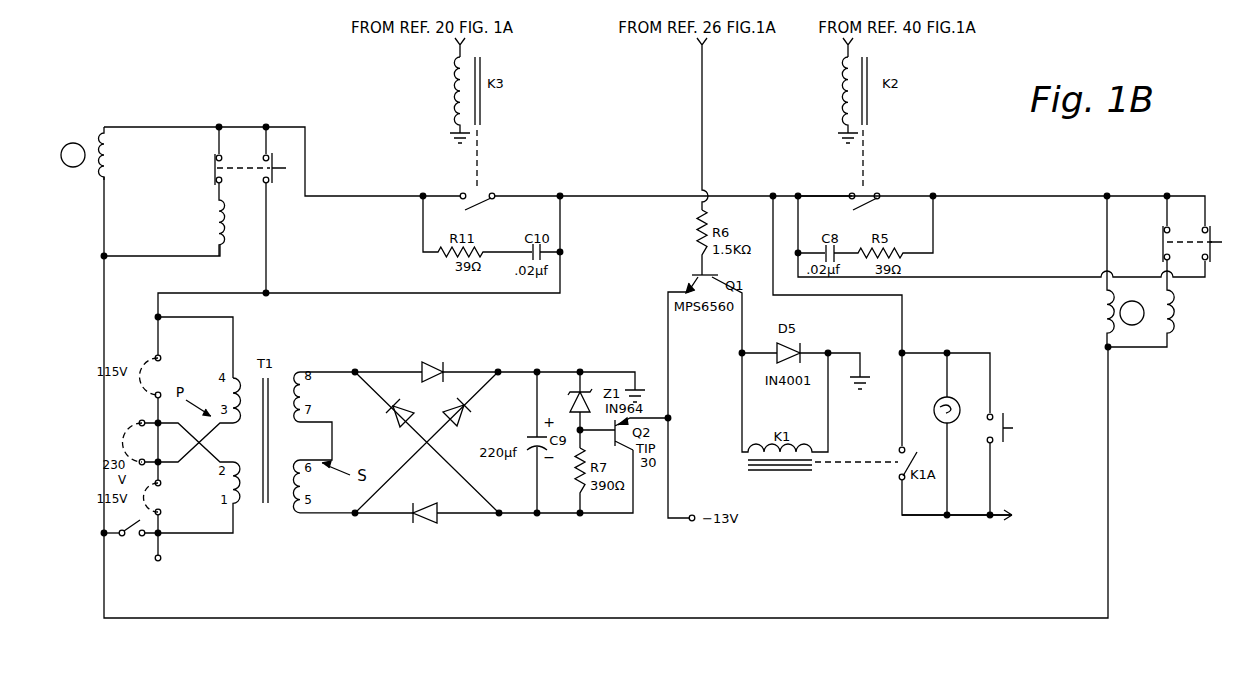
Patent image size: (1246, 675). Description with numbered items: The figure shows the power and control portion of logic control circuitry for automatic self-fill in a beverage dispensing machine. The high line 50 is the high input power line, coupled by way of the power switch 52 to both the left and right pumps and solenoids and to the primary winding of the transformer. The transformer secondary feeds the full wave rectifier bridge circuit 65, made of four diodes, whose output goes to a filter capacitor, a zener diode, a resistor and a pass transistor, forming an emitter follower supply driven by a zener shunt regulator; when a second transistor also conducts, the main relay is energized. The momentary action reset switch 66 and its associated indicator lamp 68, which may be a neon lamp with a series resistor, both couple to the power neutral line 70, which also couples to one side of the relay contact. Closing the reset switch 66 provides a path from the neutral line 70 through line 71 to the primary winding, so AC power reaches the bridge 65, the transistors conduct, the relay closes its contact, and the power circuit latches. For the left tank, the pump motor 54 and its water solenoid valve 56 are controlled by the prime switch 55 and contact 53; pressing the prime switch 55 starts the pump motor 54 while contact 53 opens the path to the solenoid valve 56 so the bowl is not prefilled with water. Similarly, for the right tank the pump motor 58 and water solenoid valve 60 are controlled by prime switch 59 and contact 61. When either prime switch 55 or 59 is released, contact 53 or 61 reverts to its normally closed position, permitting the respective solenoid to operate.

The high line 50 is at (162, 558).
The power switch 52 is at (129, 538).
The contact 53 is at (215, 174).
The pump motor 54 is at (72, 138).
The prime switch 55 is at (274, 183).
The water solenoid valve 56 is at (215, 225).
The pump motor 58 is at (1104, 312).
The prime switch 59 is at (1212, 256).
The water solenoid valve 60 is at (1178, 310).
The contact 61 is at (1162, 250).
The full wave rectifier bridge circuit 65 is at (398, 376).
The momentary action reset switch 66 is at (1008, 421).
The indicator lamp 68 is at (958, 402).
The power neutral line 70 is at (970, 516).
The line 71 is at (648, 200).